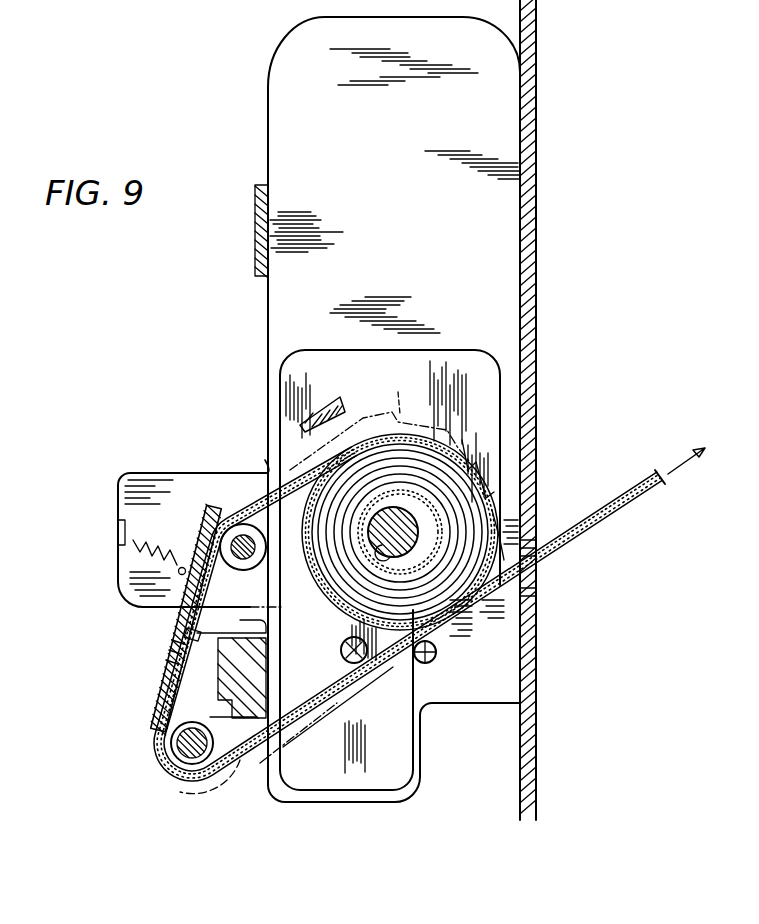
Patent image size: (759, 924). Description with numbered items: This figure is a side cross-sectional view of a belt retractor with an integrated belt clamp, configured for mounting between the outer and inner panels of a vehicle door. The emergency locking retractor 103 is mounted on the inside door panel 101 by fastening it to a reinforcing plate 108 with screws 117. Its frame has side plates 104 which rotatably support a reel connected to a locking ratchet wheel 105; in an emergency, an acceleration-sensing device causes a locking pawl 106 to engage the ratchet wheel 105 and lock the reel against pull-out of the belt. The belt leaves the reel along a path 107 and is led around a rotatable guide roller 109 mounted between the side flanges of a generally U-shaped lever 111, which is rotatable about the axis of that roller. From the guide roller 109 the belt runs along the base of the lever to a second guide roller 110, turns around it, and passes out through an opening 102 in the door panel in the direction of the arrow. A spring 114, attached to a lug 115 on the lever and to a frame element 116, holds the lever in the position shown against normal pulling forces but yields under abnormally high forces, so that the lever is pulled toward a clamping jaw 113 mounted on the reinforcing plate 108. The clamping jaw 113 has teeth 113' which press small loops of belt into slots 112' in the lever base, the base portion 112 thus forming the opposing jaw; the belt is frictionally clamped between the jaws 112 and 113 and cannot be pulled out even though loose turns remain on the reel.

The inside door panel 101 is at (538, 160).
The opening 102 is at (538, 582).
The emergency locking retractor 103 is at (486, 394).
The side plates 104 is at (449, 360).
The locking ratchet wheel 105 is at (380, 419).
The locking pawl 106 is at (330, 417).
The path 107 is at (268, 478).
The reinforcing plate 108 is at (268, 96).
The guide roller 109 is at (247, 528).
The second guide roller 110 is at (180, 756).
The lever 111 is at (210, 568).
The base portion 112 is at (123, 678).
The slots 112' is at (150, 657).
The clamping jaw 113 is at (282, 669).
The teeth 113' is at (161, 632).
The spring 114 is at (133, 540).
The lug 115 is at (178, 575).
The frame element 116 is at (120, 532).
The screws 117 is at (430, 664).